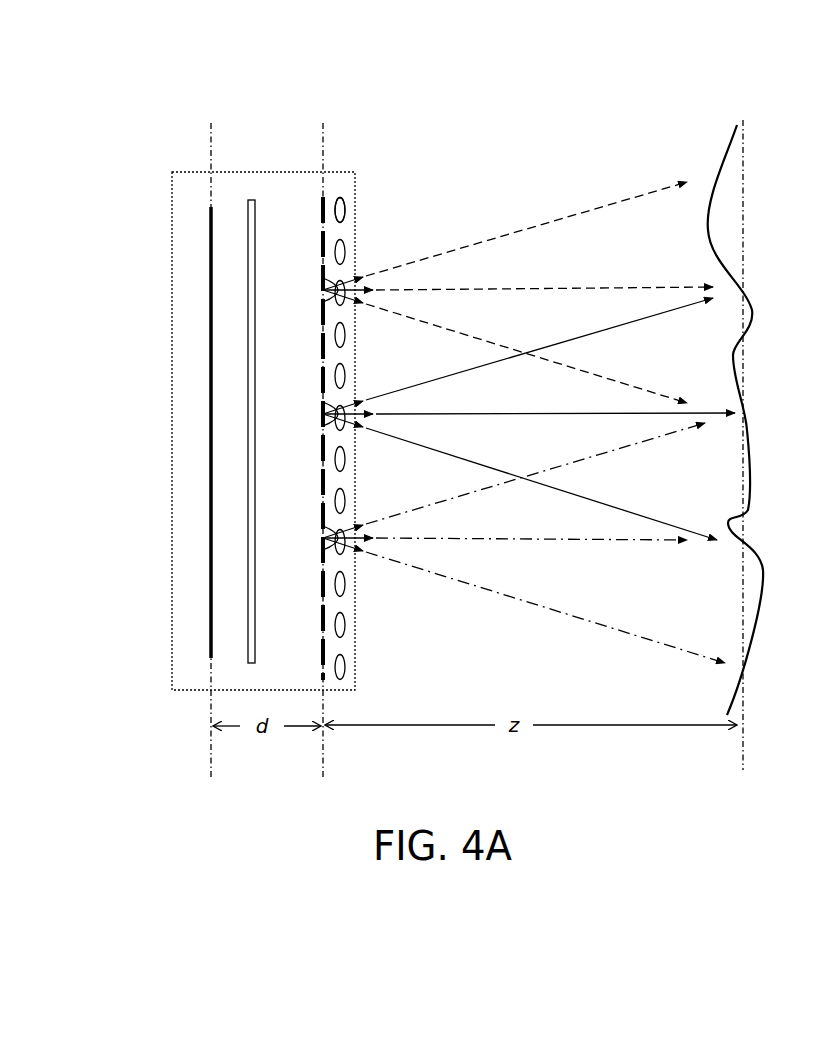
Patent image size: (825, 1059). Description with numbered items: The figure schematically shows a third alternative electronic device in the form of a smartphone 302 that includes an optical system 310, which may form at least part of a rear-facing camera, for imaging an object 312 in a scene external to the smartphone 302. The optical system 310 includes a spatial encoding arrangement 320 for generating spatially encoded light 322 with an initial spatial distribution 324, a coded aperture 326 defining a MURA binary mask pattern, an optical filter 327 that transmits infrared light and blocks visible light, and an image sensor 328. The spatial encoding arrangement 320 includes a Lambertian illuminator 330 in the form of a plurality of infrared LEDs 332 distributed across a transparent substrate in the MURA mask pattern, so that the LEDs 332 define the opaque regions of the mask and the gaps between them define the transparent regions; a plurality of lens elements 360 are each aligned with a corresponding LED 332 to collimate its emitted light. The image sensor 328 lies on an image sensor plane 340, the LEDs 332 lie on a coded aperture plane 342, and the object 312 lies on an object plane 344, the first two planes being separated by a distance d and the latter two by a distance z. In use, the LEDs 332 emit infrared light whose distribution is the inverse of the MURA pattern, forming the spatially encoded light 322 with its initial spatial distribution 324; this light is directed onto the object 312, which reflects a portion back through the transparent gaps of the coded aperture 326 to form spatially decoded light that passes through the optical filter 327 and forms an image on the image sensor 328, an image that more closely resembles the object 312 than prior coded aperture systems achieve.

The smartphone 302 is at (148, 655).
The optical system 310 is at (192, 668).
The object 312 is at (748, 648).
The spatial encoding arrangement 320 is at (305, 193).
The spatially encoded light 322 is at (577, 198).
The initial spatial distribution 324 is at (363, 248).
The coded aperture 326 is at (323, 197).
The optical filter 327 is at (250, 198).
The image sensor 328 is at (210, 270).
The Lambertian illuminator 330 is at (323, 197).
The infrared LEDs 332 is at (323, 290).
The image sensor plane 340 is at (211, 783).
The coded aperture plane 342 is at (323, 783).
The object plane 344 is at (743, 778).
The lens elements 360 is at (345, 205).